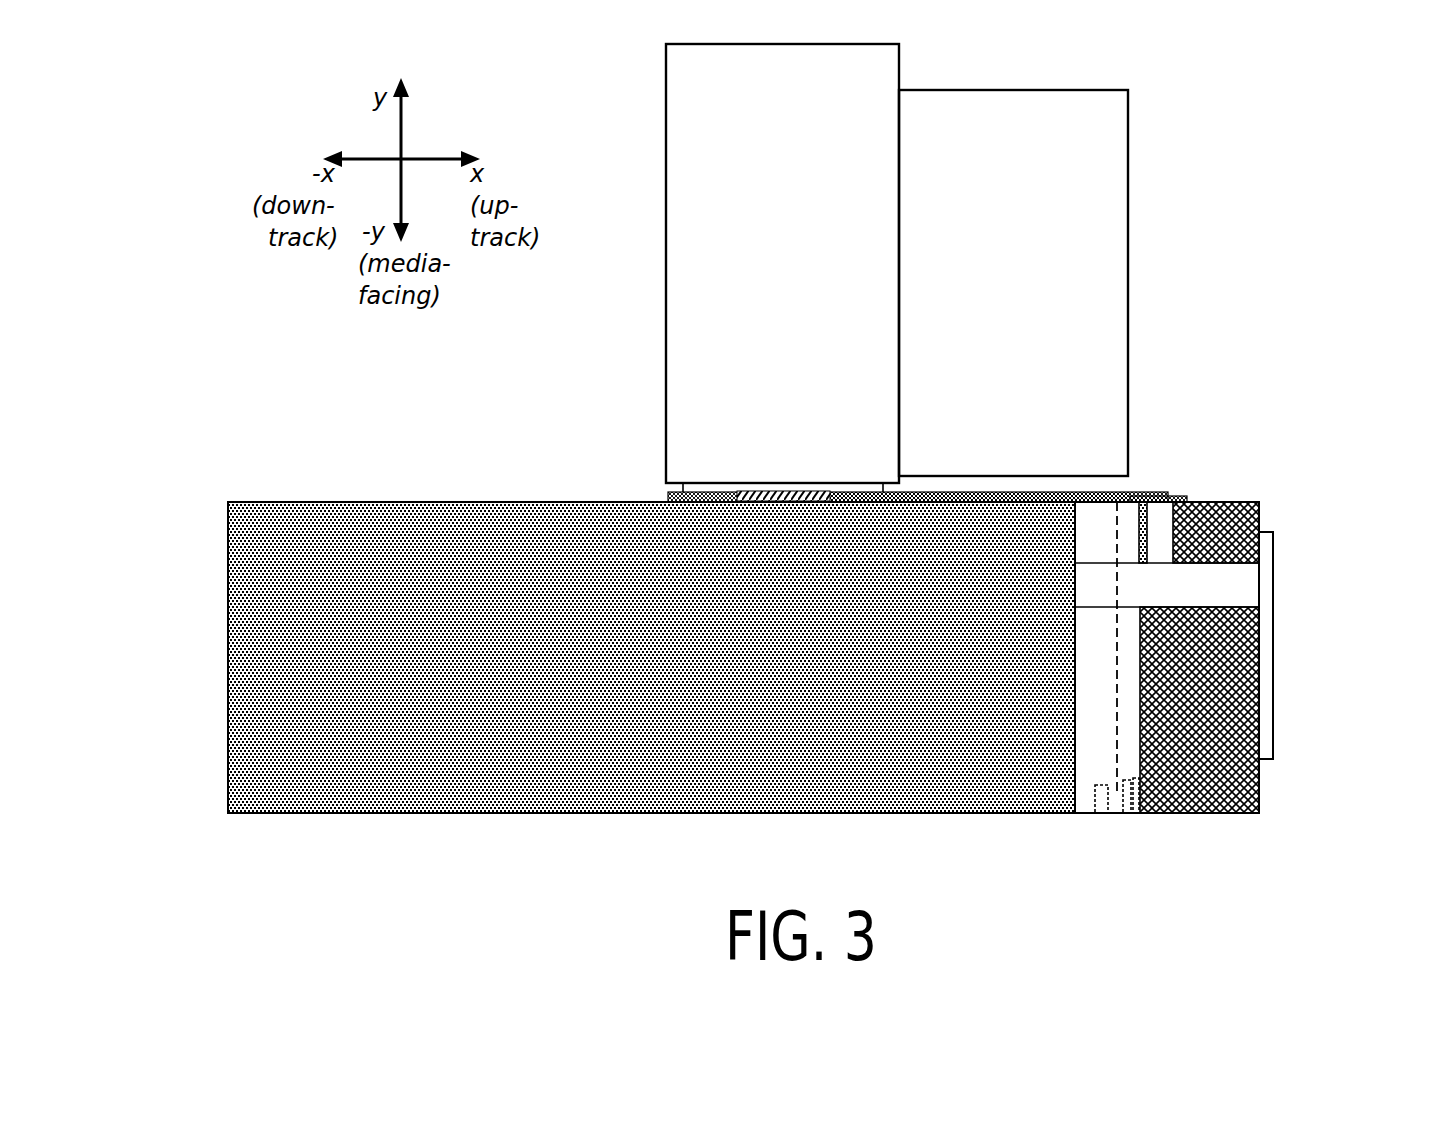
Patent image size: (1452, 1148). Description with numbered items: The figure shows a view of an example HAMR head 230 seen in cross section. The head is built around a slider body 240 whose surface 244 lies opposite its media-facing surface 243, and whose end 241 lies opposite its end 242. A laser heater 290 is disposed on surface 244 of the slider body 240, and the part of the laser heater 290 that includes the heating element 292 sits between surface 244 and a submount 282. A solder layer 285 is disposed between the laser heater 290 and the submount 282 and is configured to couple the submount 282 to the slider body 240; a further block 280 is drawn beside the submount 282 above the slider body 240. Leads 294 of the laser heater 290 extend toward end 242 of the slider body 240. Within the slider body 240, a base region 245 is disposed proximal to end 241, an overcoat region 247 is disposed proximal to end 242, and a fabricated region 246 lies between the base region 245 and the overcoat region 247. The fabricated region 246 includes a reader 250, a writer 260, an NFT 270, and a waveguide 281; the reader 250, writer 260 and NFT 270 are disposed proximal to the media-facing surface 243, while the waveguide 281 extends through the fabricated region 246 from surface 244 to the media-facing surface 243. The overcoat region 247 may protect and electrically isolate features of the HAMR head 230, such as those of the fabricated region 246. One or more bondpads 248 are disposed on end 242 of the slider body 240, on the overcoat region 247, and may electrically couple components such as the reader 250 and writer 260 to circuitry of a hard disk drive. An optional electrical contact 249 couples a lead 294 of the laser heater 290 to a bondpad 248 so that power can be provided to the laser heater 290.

The HAMR head 230 is at (1310, 175).
The slider body 240 is at (302, 550).
The end 241 is at (217, 614).
The end 242 is at (1313, 637).
The media-facing surface 243 is at (720, 818).
The surface 244 is at (525, 496).
The base region 245 is at (523, 786).
The fabricated region 246 is at (1090, 755).
The overcoat region 247 is at (1235, 778).
The bondpads 248 is at (1265, 575).
The electrical contact 249 is at (1192, 583).
The reader 250 is at (1103, 808).
The writer 260 is at (1134, 806).
The NFT 270 is at (1125, 806).
The laser diode 280 is at (1037, 301).
The waveguide 281 is at (1117, 680).
The submount 282 is at (807, 279).
The solder layer 285 is at (858, 490).
The laser heater 290 is at (664, 494).
The heating element 292 is at (782, 492).
The leads 294 is at (1133, 490).